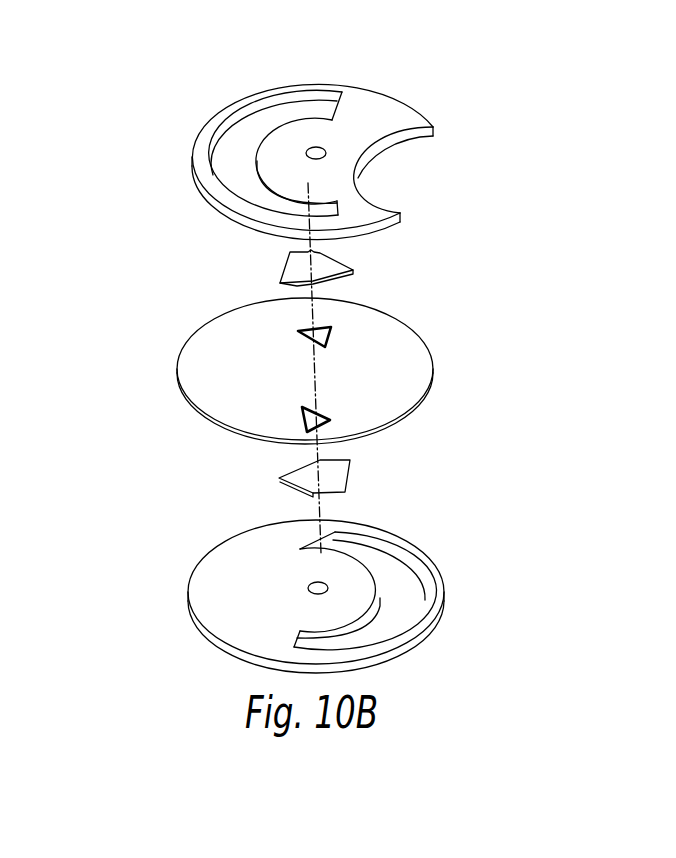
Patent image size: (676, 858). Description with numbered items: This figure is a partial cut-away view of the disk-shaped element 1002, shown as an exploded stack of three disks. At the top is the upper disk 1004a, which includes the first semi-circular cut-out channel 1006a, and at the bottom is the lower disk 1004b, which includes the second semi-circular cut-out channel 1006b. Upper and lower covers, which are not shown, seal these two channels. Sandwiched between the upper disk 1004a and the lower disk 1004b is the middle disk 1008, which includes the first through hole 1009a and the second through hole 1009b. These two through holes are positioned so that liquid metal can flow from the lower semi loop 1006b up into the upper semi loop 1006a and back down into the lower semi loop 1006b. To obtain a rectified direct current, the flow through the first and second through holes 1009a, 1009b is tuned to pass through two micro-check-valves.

The disk-shaped element 1002 is at (183, 117).
The upper disk 1004a is at (385, 115).
The first semi-circular cut-out channel 1006a is at (248, 133).
The middle disk 1008 is at (413, 388).
The first through hole 1009a is at (331, 326).
The second through hole 1009b is at (302, 408).
The lower disk 1004b is at (430, 579).
The second semi-circular cut-out channel 1006b is at (403, 614).